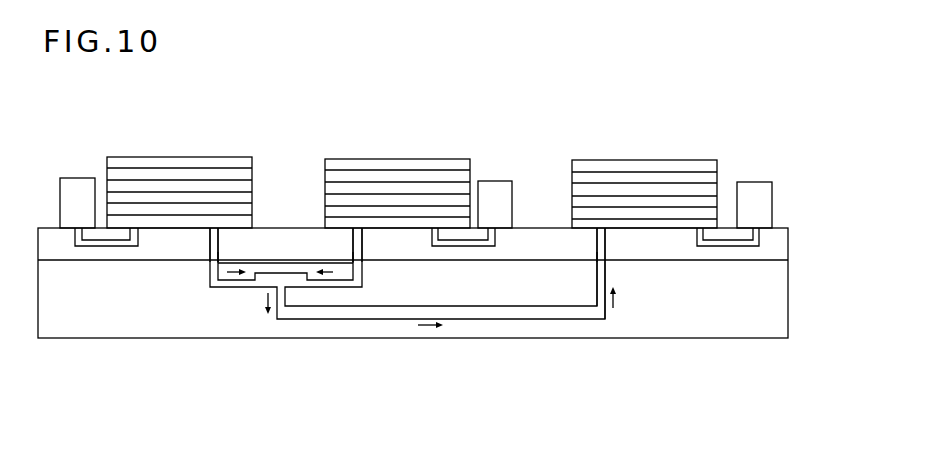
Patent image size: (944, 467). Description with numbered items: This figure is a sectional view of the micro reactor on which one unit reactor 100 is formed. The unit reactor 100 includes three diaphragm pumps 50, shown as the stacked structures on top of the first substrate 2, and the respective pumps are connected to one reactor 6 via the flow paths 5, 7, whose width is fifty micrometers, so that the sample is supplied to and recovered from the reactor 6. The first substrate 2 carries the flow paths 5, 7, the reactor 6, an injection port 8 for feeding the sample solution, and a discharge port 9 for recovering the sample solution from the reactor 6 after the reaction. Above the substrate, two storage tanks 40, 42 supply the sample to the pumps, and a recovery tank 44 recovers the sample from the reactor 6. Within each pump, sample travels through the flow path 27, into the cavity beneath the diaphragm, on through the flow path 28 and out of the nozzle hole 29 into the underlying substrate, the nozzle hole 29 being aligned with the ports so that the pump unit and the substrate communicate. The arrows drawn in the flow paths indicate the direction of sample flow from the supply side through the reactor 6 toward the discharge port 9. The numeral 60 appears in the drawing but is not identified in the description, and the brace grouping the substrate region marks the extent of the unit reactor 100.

The first substrate 2 is at (717, 313).
The flow path 5 is at (232, 283).
The reactor 6 is at (263, 282).
The flow path 7 is at (565, 315).
The injection port 8 is at (212, 267).
The discharge port 9 is at (603, 270).
The flow path 27 is at (80, 246).
The flow path 28 is at (210, 240).
The nozzle hole 29 is at (218, 258).
The storage tank 40 is at (77, 178).
The storage tank 42 is at (503, 185).
The recovery tank 44 is at (752, 188).
The diaphragm pump 50 is at (222, 157).
The epitaxial layer 60 is at (770, 253).
The unit reactor 100 is at (763, 388).